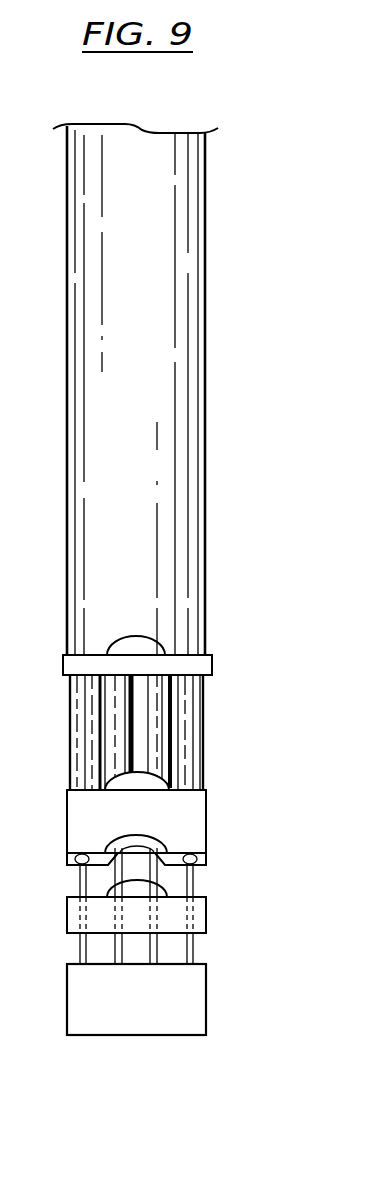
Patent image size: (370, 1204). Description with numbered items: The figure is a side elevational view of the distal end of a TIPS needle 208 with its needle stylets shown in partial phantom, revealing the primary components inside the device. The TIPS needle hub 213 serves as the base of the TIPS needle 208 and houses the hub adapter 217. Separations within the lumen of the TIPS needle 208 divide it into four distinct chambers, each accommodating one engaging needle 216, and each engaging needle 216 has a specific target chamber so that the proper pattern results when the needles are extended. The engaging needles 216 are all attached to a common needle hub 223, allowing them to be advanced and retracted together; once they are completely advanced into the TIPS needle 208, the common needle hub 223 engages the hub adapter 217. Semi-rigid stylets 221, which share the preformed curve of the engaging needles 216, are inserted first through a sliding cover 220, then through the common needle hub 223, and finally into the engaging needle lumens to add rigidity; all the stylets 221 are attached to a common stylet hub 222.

The TIPS needle 208 is at (206, 548).
The hub adapter 217 is at (160, 643).
The TIPS needle hub 213 is at (212, 667).
The engaging needle 216 is at (205, 760).
The common needle hub 223 is at (206, 826).
The sliding cover 220 is at (206, 912).
The stylets 221 is at (193, 950).
The common stylet hub 222 is at (206, 1001).